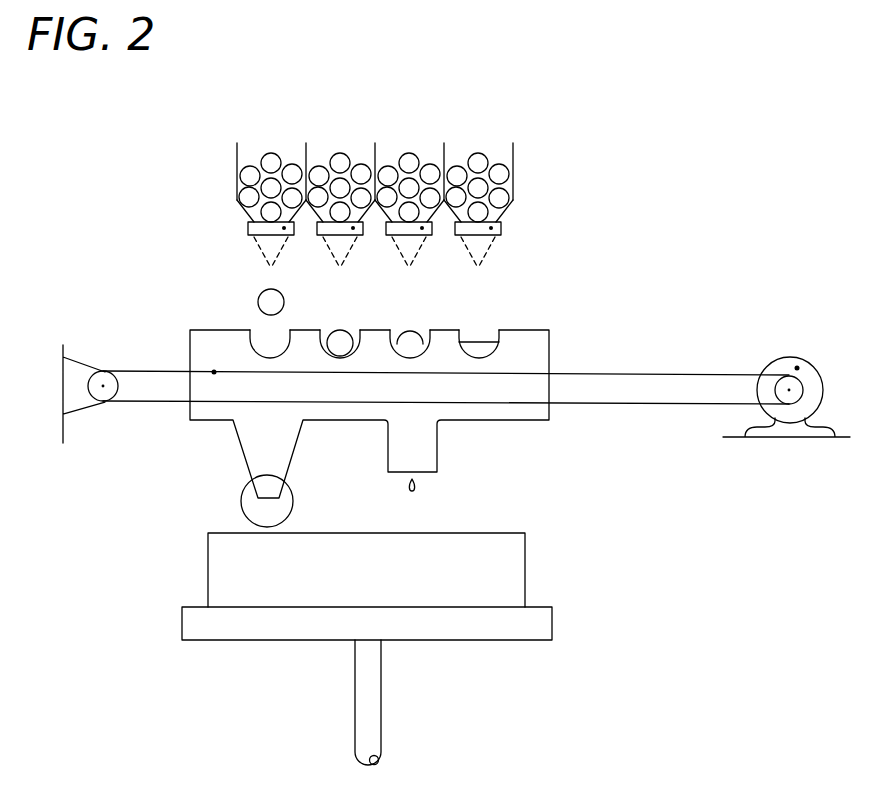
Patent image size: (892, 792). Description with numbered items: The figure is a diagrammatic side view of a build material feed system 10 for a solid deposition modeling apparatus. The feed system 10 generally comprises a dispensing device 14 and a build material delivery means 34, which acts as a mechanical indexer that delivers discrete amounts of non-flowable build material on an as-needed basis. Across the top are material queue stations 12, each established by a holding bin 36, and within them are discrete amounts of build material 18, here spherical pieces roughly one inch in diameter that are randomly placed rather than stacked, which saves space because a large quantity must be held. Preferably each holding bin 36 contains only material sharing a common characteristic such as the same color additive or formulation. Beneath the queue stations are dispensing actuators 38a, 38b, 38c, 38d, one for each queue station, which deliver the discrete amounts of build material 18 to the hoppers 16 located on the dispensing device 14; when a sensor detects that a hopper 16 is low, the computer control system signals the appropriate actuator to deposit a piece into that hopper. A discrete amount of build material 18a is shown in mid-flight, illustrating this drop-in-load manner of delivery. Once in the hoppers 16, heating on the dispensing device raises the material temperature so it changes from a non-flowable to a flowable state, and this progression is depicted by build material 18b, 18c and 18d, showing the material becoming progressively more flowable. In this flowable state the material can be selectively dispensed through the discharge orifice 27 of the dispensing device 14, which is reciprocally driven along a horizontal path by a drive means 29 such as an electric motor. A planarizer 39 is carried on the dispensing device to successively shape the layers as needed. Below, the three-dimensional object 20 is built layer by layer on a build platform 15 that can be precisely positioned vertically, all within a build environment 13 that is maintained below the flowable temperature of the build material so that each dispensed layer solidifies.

The build material feed system 10 is at (526, 276).
The material queue stations 12 is at (479, 146).
The build environment 13 is at (594, 546).
The dispensing device 14 is at (190, 345).
The build platform 15 is at (508, 630).
The hopper 16 is at (247, 321).
The discrete amounts of build material 18 is at (246, 174).
The discrete amount of build material in mid-flight 18a is at (269, 289).
The build material beginning to change state 18b is at (340, 329).
The build material partially changed to flowable state 18c is at (410, 335).
The build material in flowable state 18d is at (486, 341).
The three-dimensional object 20 is at (510, 590).
The discharge orifice 27 is at (412, 473).
The drive means 29 is at (783, 360).
The build material delivery means 34 is at (542, 119).
The holding bin 36 is at (513, 150).
The dispensing actuator 38a is at (249, 228).
The dispensing actuator 38b is at (318, 235).
The dispensing actuator 38c is at (387, 236).
The dispensing actuator 38d is at (501, 228).
The planarizer 39 is at (240, 498).